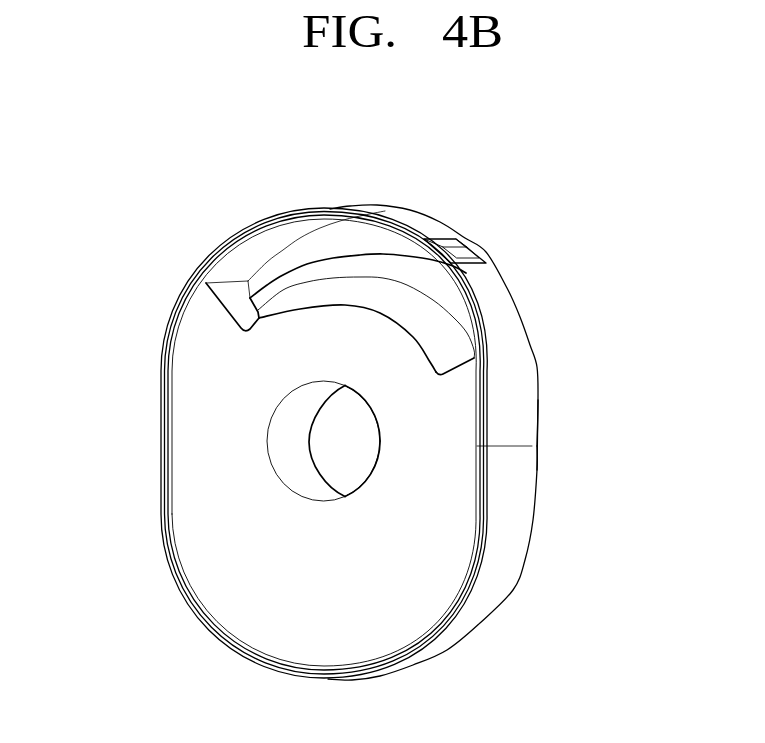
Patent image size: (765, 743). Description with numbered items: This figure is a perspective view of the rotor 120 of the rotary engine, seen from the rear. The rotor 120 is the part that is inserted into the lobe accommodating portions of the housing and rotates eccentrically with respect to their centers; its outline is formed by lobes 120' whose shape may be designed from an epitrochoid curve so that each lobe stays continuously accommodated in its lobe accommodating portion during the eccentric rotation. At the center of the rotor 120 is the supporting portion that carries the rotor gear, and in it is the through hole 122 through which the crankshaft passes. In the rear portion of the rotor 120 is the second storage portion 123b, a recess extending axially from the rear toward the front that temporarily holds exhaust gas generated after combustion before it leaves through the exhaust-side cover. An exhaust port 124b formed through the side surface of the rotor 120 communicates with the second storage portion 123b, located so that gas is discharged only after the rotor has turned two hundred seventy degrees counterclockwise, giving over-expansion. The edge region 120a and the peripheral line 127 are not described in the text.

The rotor 120 is at (290, 443).
The lobe 120' is at (476, 325).
The side surface of housing 120a is at (518, 388).
The through hole 122 is at (344, 435).
The second storage portion 123b is at (305, 246).
The exhaust port 124b is at (455, 249).
The rim / sealing ring 127 is at (165, 441).